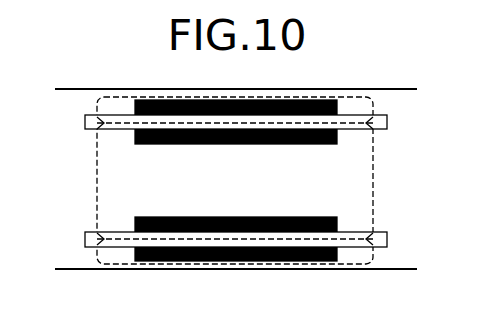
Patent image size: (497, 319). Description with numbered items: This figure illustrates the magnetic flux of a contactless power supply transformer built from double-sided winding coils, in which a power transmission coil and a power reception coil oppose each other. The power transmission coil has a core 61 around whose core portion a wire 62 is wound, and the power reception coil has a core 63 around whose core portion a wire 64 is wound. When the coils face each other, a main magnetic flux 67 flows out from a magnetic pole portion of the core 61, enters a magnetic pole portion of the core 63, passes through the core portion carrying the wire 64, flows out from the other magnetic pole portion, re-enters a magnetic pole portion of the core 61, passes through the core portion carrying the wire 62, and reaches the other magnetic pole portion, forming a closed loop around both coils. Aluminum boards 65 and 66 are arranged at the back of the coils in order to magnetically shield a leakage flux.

The core 61 is at (387, 239).
The wire 62 is at (135, 222).
The core 63 is at (387, 123).
The wire 64 is at (337, 141).
The aluminum board 65 is at (72, 270).
The aluminum board 66 is at (74, 89).
The main magnetic flux 67 is at (373, 207).